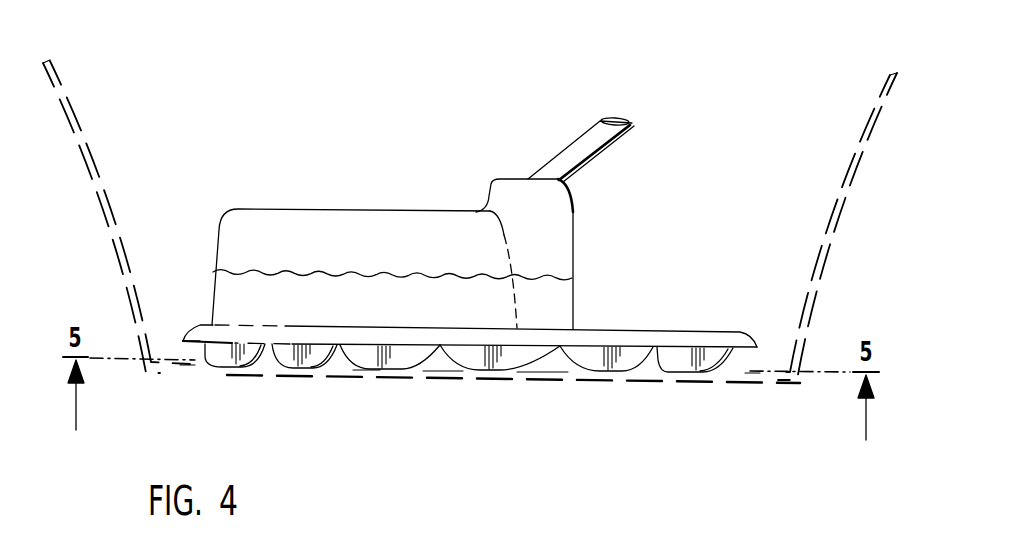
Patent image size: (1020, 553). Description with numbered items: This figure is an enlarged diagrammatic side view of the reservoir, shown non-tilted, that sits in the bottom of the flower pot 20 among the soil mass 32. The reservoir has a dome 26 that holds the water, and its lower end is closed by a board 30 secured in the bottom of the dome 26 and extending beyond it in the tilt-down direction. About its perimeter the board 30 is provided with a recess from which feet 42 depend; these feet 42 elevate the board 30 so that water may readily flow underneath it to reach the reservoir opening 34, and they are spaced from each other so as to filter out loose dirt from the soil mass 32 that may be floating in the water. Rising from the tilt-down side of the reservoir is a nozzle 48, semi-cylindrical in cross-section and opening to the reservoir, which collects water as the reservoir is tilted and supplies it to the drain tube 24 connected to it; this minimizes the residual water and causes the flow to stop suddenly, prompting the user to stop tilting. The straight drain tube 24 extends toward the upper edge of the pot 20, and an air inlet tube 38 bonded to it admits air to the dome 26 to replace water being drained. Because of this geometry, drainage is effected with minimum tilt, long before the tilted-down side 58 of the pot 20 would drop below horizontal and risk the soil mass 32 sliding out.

The flower pot 20 is at (67, 110).
The drain tube 24 is at (565, 147).
The dome 26 is at (305, 242).
The board 30 is at (617, 335).
The soil mass 32 is at (665, 232).
The reservoir opening 34 is at (223, 330).
The air inlet tube 38 is at (627, 117).
The feet 42 is at (580, 358).
The nozzle 48 is at (574, 193).
The tilted-down side 58 is at (870, 130).